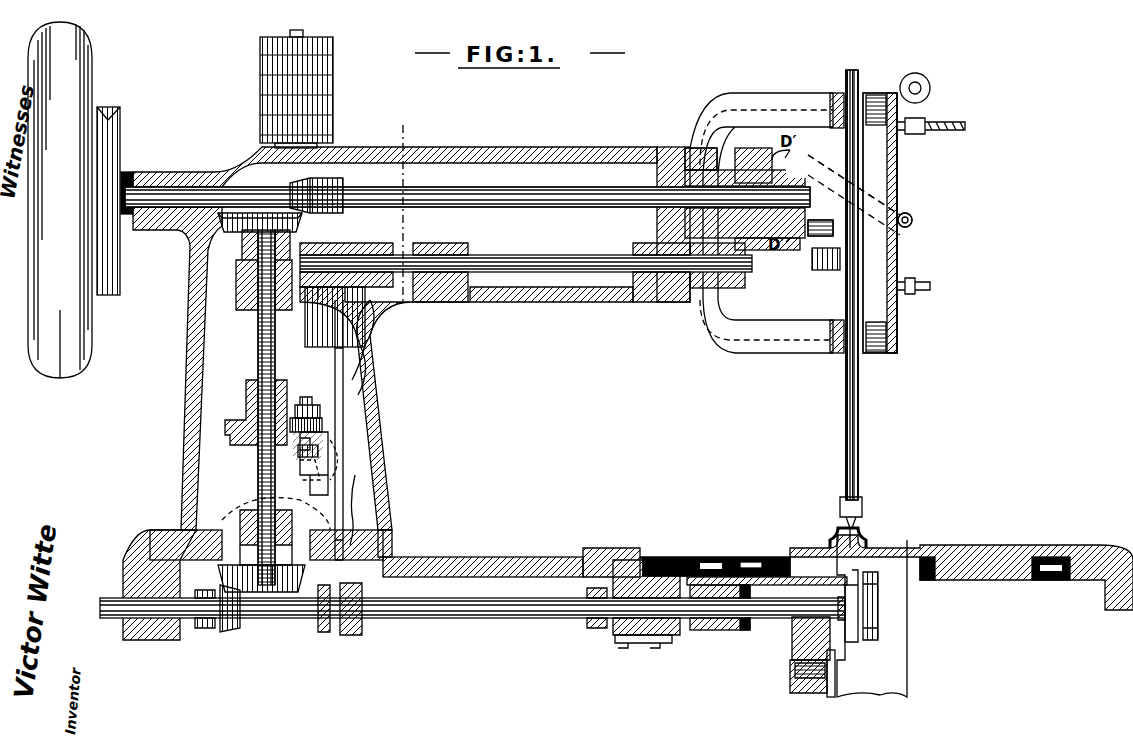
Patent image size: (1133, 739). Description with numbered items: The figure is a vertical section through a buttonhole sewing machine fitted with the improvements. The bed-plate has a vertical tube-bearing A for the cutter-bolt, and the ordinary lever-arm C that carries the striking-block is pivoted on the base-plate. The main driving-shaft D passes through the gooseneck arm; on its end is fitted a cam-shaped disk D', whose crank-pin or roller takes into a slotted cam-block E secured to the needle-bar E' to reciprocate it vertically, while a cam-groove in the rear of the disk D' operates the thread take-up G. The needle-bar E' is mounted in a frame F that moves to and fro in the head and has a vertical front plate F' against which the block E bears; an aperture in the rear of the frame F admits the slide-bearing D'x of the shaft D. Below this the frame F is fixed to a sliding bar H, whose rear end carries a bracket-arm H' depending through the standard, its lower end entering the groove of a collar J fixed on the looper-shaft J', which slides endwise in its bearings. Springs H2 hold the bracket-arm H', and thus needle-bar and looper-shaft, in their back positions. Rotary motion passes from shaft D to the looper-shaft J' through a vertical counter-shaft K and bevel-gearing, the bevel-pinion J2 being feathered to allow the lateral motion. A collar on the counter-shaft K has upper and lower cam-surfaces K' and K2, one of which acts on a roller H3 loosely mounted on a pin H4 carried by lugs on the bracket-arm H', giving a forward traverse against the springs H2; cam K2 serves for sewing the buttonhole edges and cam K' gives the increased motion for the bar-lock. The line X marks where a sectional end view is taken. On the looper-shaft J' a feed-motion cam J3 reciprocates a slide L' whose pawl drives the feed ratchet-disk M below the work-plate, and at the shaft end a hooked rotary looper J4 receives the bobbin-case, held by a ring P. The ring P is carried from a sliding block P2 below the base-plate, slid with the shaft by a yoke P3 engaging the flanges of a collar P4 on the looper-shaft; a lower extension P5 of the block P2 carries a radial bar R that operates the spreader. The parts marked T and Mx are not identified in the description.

The main driving-shaft D is at (467, 190).
The cam-shaped disk D' is at (467, 205).
The slide-bearing D'x is at (705, 159).
The section line X is at (401, 203).
The sliding bar H is at (526, 253).
The bracket-arm H' is at (337, 423).
The springs H2 is at (372, 350).
The roller H3 is at (322, 425).
The pin H4 is at (290, 462).
The slide T is at (330, 465).
The vertical counter-shaft K is at (255, 407).
The upper cam-surface K' is at (230, 412).
The lower cam-surface K2 is at (232, 440).
The collar J is at (347, 613).
The looper-shaft J' is at (472, 613).
The bevel-pinion J2 is at (238, 628).
The feed-motion cam J3 is at (606, 628).
The rotary looper J4 is at (840, 595).
The slide L' is at (646, 613).
The ring P is at (878, 610).
The sliding block P2 is at (780, 628).
The yoke P3 is at (722, 632).
The collar P4 is at (745, 632).
The lower extension P5 is at (792, 683).
The vertical tube-bearing A is at (872, 616).
The radial bar R is at (835, 697).
The feed-operating ratchet-disk M is at (694, 556).
The slide plate Mx is at (752, 560).
The frame F is at (769, 226).
The vertical front plate F' is at (880, 223).
The slotted cam-block E is at (820, 216).
The needle-bar E' is at (835, 285).
The lever-arm C is at (810, 163).
The thread take-up G is at (910, 216).